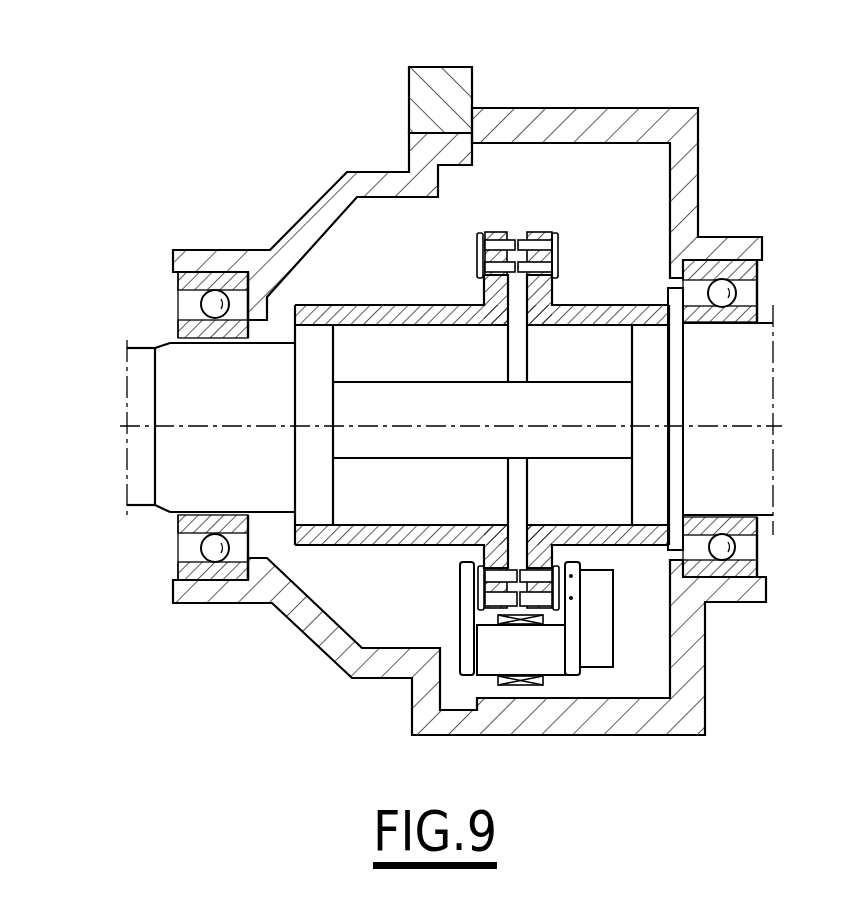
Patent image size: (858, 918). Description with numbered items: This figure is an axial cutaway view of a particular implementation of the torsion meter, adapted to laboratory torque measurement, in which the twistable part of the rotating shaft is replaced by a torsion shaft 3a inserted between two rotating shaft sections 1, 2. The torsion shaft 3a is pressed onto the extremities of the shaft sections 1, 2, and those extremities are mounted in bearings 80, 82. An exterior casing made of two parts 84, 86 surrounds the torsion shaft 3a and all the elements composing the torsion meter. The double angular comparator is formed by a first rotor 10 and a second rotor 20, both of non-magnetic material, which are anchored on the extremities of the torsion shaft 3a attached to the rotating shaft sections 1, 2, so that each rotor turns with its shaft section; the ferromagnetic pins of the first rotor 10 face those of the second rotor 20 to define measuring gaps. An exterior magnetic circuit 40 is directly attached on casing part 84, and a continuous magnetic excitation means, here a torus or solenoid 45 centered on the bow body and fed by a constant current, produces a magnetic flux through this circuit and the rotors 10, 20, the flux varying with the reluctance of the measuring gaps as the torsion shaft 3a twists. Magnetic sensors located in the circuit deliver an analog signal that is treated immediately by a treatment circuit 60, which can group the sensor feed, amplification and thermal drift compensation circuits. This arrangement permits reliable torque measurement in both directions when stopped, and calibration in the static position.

The first section of the rotating shaft 1 is at (180, 494).
The second section of the rotating shaft 2 is at (755, 490).
The torsion shaft 3a is at (448, 446).
The first rotor 10 is at (394, 312).
The second rotor 20 is at (604, 304).
The exterior magnetic circuit 40 is at (448, 605).
The solenoid 45 is at (524, 686).
The treatment circuit 60 is at (600, 641).
The bearing 80 is at (199, 281).
The bearing 82 is at (757, 272).
The casing part 84 is at (314, 221).
The casing part 86 is at (581, 112).